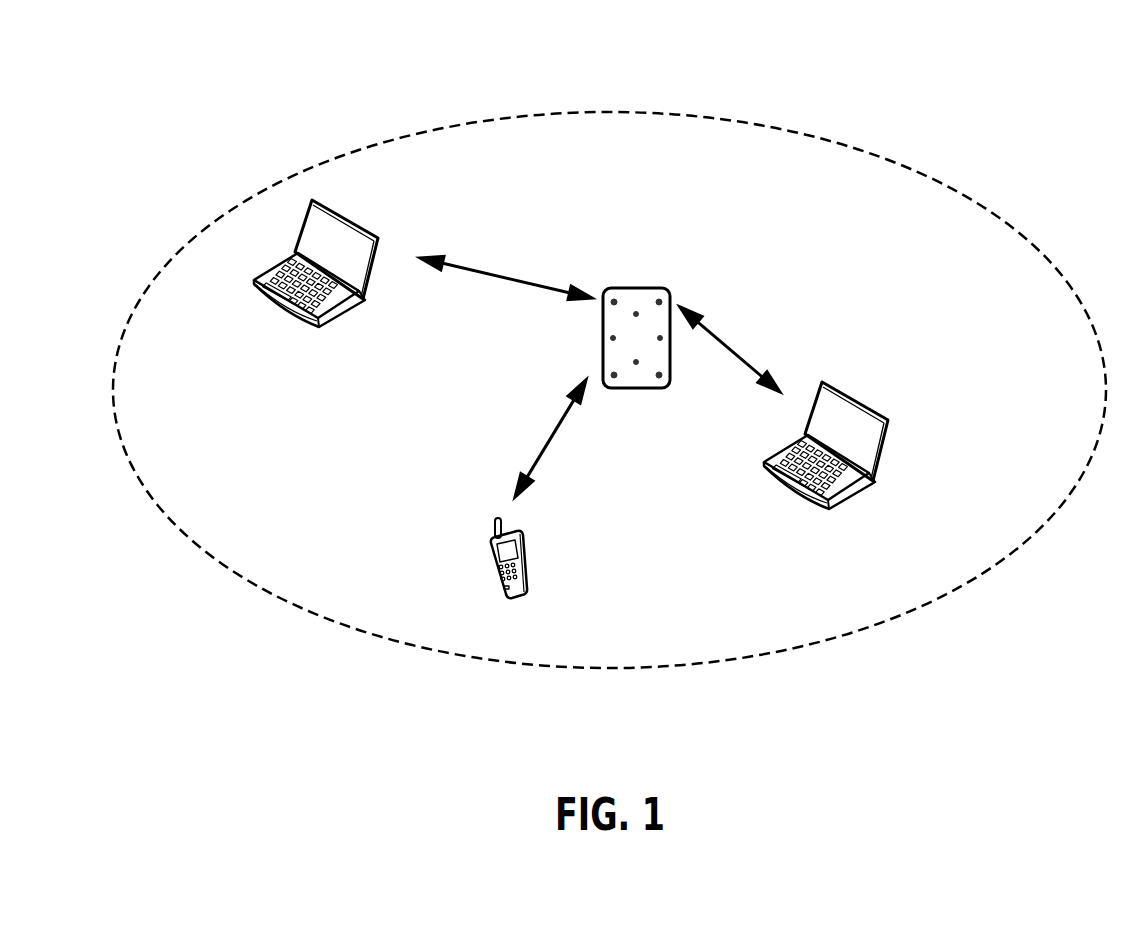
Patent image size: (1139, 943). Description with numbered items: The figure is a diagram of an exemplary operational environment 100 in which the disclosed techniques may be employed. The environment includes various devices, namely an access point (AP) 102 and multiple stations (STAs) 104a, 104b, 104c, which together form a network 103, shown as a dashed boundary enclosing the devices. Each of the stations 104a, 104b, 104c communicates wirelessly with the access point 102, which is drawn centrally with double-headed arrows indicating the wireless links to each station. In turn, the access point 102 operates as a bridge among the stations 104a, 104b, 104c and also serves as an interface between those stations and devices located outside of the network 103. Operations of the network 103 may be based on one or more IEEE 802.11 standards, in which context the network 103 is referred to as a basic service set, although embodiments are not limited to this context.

The operational environment 100 is at (1126, 48).
The access point 102 is at (670, 297).
The network 103 is at (965, 197).
The station 104a is at (380, 236).
The station 104b is at (527, 543).
The station 104c is at (890, 418).